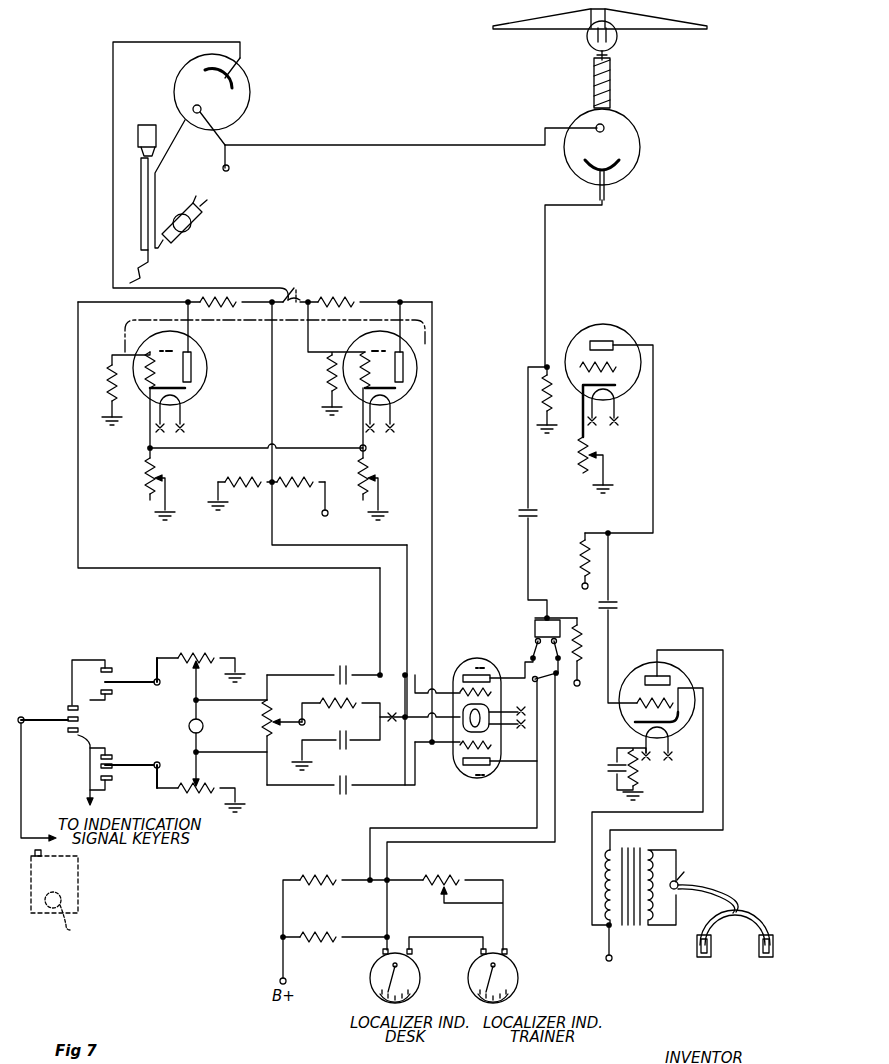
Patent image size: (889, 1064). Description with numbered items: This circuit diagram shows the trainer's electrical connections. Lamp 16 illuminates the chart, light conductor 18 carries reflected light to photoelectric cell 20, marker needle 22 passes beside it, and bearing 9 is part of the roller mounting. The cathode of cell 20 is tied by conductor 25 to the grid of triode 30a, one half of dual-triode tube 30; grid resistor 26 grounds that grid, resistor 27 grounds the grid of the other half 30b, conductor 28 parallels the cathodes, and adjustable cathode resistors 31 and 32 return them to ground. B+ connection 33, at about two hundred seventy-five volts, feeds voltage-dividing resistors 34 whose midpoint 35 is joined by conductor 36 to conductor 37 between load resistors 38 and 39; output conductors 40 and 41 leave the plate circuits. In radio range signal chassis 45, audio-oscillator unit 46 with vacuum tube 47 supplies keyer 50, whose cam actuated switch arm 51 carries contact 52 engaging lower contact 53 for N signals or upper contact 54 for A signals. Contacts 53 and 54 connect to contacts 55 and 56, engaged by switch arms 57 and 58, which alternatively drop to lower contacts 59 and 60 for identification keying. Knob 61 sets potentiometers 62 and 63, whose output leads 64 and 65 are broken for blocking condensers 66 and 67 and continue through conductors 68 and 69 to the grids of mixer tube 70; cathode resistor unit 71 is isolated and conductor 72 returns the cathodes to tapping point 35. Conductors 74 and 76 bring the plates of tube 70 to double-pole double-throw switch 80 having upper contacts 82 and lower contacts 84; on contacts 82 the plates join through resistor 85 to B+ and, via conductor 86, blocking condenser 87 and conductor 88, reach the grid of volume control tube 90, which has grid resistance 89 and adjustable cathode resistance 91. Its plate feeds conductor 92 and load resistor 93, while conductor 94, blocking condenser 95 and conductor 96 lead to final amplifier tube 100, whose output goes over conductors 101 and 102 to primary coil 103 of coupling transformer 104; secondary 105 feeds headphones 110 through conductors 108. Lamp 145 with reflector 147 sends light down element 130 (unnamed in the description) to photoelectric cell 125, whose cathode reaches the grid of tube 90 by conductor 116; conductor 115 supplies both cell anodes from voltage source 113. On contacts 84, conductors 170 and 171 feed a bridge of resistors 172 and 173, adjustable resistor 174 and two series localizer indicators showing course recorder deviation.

The bearing 9 is at (150, 124).
The electric lamp 16 is at (190, 236).
The light conductor 18 is at (150, 194).
The photoelectric cell 20 is at (248, 80).
The marker needle 22 is at (138, 258).
The conductor 25 is at (168, 42).
The grid resistor 26 is at (326, 380).
The resistor 27 is at (106, 374).
The conductor 28 is at (210, 448).
The dual-triode tube 30 is at (300, 288).
The triode vacuum tube 30a is at (358, 348).
The triode vacuum tube unit 30b is at (205, 354).
The adjustable cathode resistor 31 is at (366, 470).
The adjustable cathode resistor 32 is at (145, 480).
The B+ connection 33 is at (318, 510).
The voltage-dividing resistors 34 is at (254, 478).
The midpoint of voltage divider 35 is at (258, 490).
The conductor 36 is at (272, 400).
The conductor 37 is at (290, 290).
The load resistor 38 is at (342, 302).
The load resistor 39 is at (226, 308).
The output conductor 40 is at (432, 525).
The output conductor 41 is at (114, 568).
The radio range signal chassis 45 is at (271, 671).
The audio-oscillator unit 46 is at (82, 895).
The vacuum tube 47 is at (70, 917).
The automatic keyer device 50 is at (99, 716).
The cam actuated switch arm 51 is at (34, 710).
The contact 52 is at (80, 716).
The lower contact 53 is at (72, 748).
The upper contact 54 is at (72, 690).
The contact 55 is at (110, 756).
The contact 56 is at (108, 666).
The switch arm 57 is at (145, 764).
The switch arm 58 is at (148, 680).
The lower contact 59 is at (108, 780).
The lower contact 60 is at (110, 694).
The common control knob 61 is at (203, 728).
The potentiometer 62 is at (198, 658).
The potentiometer 63 is at (192, 794).
The output lead 64 is at (316, 674).
The output lead 65 is at (298, 787).
The blocking condenser 66 is at (342, 666).
The blocking condenser 67 is at (348, 790).
The conductor 68 is at (376, 670).
The conductor 69 is at (398, 785).
The double triode vacuum tube 70 is at (474, 652).
The cathode resistor unit 71 is at (366, 730).
The conductor 72 is at (407, 628).
The conductor 74 is at (520, 656).
The conductor 76 is at (522, 764).
The double-pole double-throw switch 80 is at (530, 650).
The upper contacts 82 is at (536, 630).
The lower contacts 84 is at (534, 682).
The resistor 85 is at (584, 648).
The conductor 86 is at (528, 553).
The blocking condenser 87 is at (520, 508).
The conductor 88 is at (528, 400).
The grid resistance 89 is at (548, 406).
The volume control tube 90 is at (632, 330).
The adjustable cathode resistance 91 is at (604, 462).
The conductor 92 is at (655, 436).
The load resistor 93 is at (582, 552).
The conductor 94 is at (610, 574).
The blocking condenser 95 is at (624, 606).
The conductor 96 is at (610, 640).
The final amplifier tube 100 is at (676, 676).
The conductor 101 is at (725, 742).
The conductor 102 is at (703, 778).
The primary coil 103 is at (606, 892).
The coupling transformer 104 is at (648, 846).
The secondary 105 is at (654, 926).
The conductors 108 is at (680, 876).
The headphones 110 is at (745, 910).
The source of operating voltage 113 is at (222, 170).
The conductor 115 is at (425, 145).
The conductor 116 is at (547, 270).
The photoelectric cell 125 is at (636, 136).
The shaft 130 is at (610, 80).
The lamp 145 is at (620, 40).
The reflector 147 is at (530, 30).
The conductor 170 is at (536, 816).
The conductor 171 is at (556, 802).
The resistor 172 is at (318, 886).
The resistor 173 is at (306, 940).
The adjustable resistor 174 is at (444, 876).